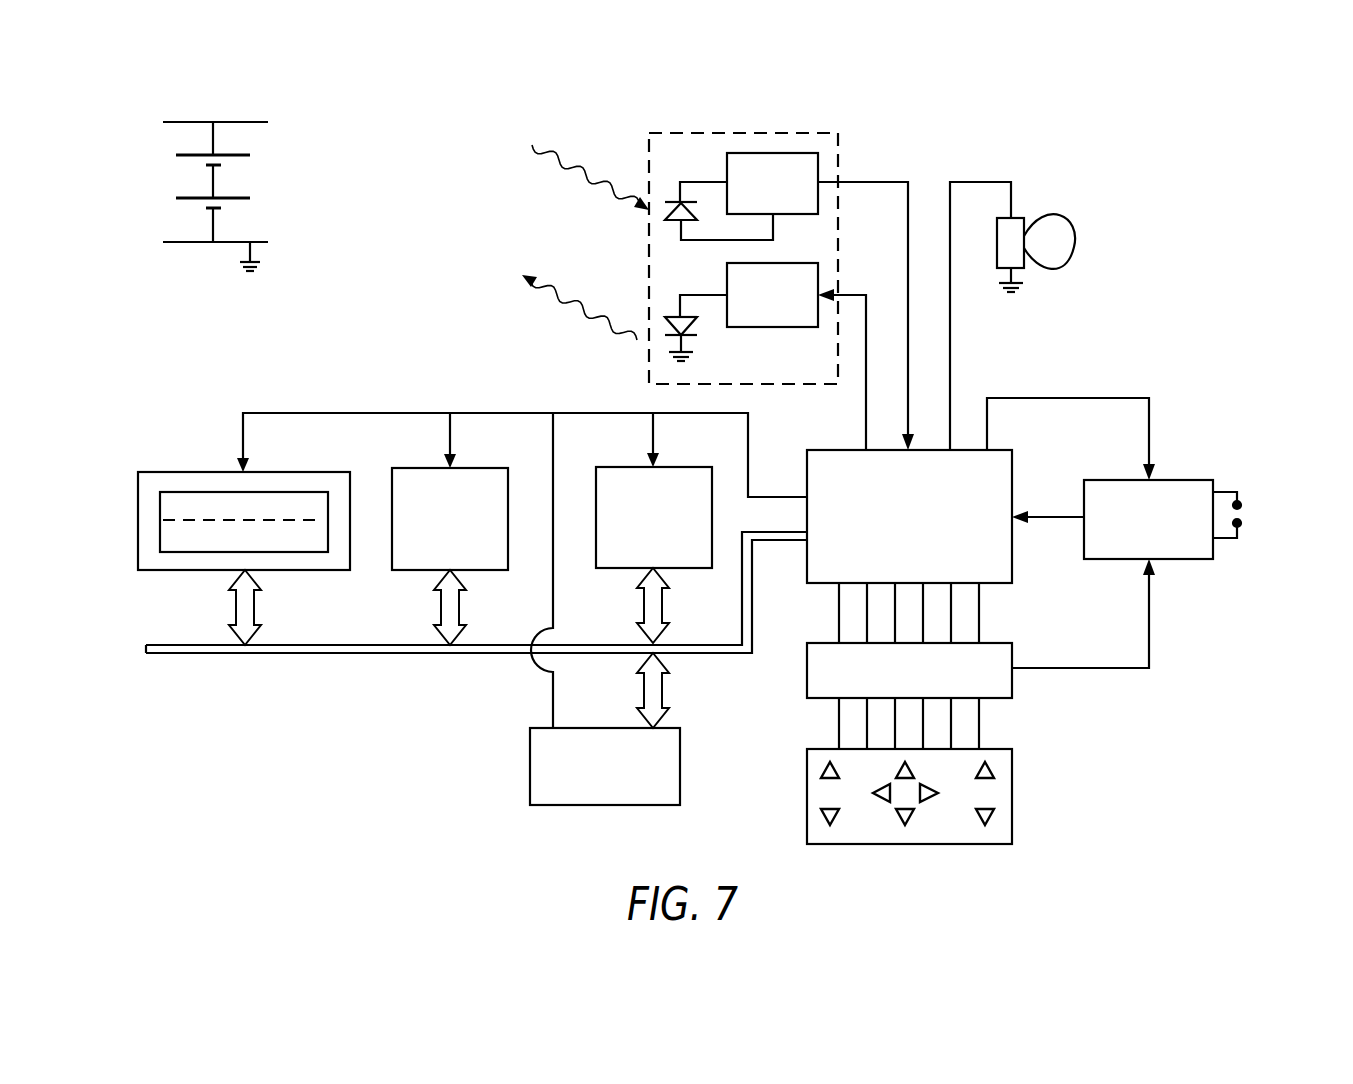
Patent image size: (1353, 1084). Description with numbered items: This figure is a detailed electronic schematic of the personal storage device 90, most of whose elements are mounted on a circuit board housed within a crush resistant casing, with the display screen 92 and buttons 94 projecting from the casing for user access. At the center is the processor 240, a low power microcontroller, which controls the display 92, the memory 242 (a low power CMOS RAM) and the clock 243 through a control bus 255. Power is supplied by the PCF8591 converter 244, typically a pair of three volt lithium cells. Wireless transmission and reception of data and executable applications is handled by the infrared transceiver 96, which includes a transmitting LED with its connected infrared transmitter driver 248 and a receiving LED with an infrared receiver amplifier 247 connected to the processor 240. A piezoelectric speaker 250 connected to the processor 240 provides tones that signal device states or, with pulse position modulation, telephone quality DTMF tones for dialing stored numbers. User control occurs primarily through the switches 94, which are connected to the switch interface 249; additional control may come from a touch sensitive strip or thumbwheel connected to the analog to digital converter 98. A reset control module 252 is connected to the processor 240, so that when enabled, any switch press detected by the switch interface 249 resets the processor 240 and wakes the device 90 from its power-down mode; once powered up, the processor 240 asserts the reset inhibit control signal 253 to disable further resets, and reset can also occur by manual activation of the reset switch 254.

The personal storage device 90 is at (1207, 255).
The display screen 92 is at (186, 462).
The buttons 94 is at (1012, 798).
The infrared transceiver 96 is at (741, 133).
The analog to digital converter 98 is at (624, 782).
The processor 240 is at (934, 532).
The memory 242 is at (476, 532).
The clock 243 is at (680, 532).
The PCF8591 converter 244 is at (283, 182).
The infrared receiver amplifier 247 is at (798, 200).
The infrared transmitter driver 248 is at (798, 310).
The switch interface 249 is at (934, 687).
The piezoelectric speaker 250 is at (1061, 210).
The reset control module 252 is at (1174, 532).
The reset inhibit control signal 253 is at (1083, 398).
The reset switch 254 is at (1255, 505).
The control bus 255 is at (505, 413).